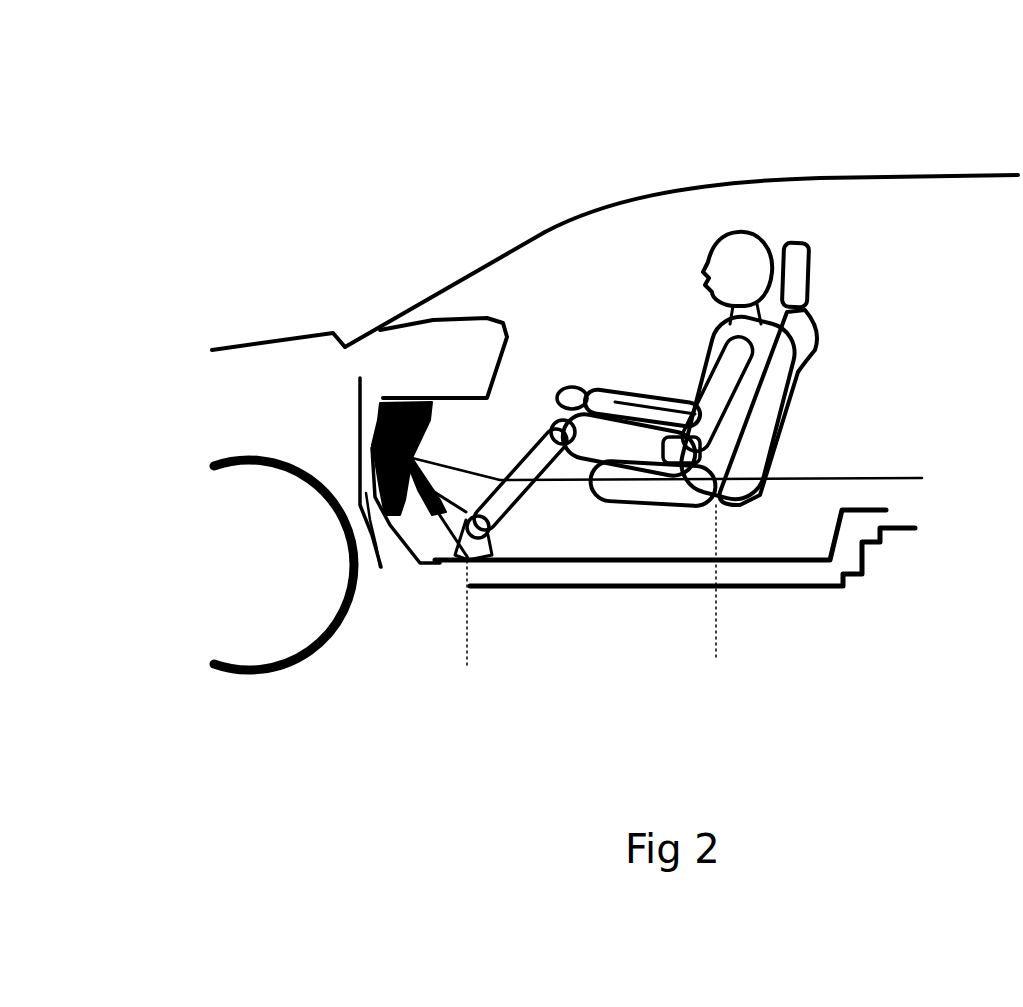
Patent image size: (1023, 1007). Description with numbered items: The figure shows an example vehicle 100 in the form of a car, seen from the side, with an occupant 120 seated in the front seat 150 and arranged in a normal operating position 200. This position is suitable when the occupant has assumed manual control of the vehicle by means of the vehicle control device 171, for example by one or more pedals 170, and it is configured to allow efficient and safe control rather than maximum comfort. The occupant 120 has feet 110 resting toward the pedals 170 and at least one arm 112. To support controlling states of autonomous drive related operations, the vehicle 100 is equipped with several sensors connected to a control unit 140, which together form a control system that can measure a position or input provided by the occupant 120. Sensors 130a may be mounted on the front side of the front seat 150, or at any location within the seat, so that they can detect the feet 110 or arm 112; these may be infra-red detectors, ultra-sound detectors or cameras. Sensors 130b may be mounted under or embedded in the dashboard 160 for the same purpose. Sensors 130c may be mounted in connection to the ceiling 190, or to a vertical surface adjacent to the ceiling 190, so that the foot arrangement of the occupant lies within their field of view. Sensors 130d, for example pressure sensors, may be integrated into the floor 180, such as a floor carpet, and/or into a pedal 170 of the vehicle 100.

The vehicle 100 is at (257, 162).
The feet 110 is at (458, 507).
The arm 112 is at (628, 385).
The occupant 120 is at (628, 328).
The sensors 130a is at (660, 532).
The sensors 130b is at (448, 372).
The sensors 130c is at (580, 258).
The sensors 130d is at (425, 610).
The control unit 140 is at (284, 524).
The front seat 150 is at (828, 372).
The dashboard 160 is at (446, 315).
The pedals 170 is at (393, 525).
The vehicle control device 171 is at (357, 498).
The floor 180 is at (435, 600).
The ceiling 190 is at (540, 222).
The normal operating position 200 is at (795, 503).